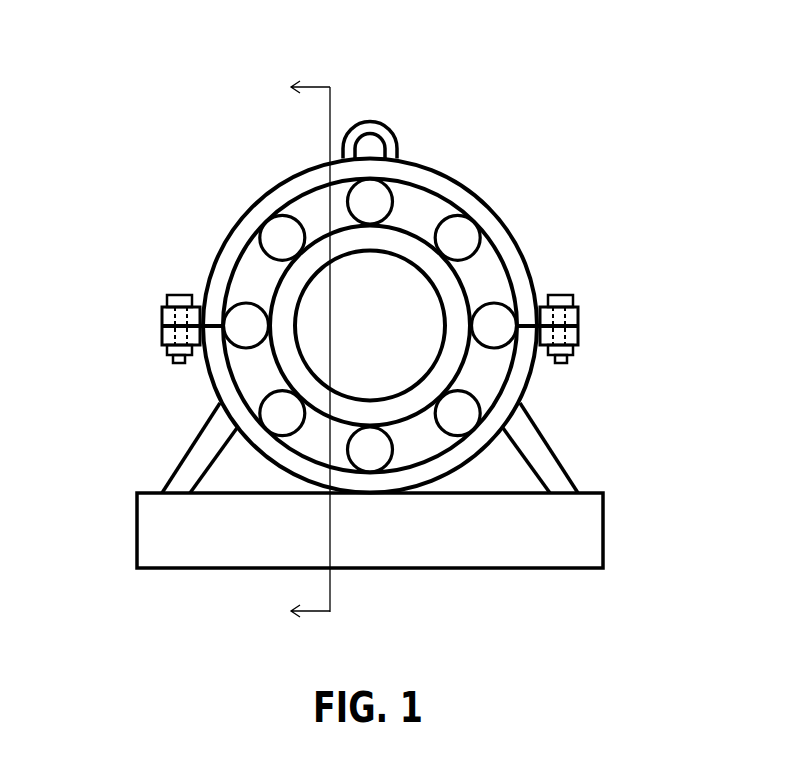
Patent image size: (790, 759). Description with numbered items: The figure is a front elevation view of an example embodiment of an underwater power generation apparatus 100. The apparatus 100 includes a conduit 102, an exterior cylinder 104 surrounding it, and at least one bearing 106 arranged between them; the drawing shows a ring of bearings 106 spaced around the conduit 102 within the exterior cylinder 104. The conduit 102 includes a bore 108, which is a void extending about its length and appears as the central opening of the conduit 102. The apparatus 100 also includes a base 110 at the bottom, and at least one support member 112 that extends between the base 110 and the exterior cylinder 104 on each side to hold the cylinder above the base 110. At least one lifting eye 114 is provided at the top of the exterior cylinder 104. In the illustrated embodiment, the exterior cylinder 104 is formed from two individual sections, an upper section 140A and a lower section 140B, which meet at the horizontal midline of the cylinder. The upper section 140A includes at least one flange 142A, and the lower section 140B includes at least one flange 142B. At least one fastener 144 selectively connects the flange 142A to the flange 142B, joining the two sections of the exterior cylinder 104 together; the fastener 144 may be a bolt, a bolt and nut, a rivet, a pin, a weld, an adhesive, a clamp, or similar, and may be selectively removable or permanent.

The underwater power generation apparatus 100 is at (122, 88).
The conduit 102 is at (447, 291).
The exterior cylinder 104 is at (500, 238).
The bearing 106 is at (367, 203).
The bore 108 is at (405, 347).
The base 110 is at (157, 523).
The support member 112 is at (538, 461).
The lifting eye 114 is at (396, 137).
The upper section 140A is at (453, 195).
The lower section 140B is at (220, 378).
The flange 142A is at (580, 312).
The flange 142B is at (580, 330).
The fastener 144 is at (167, 301).